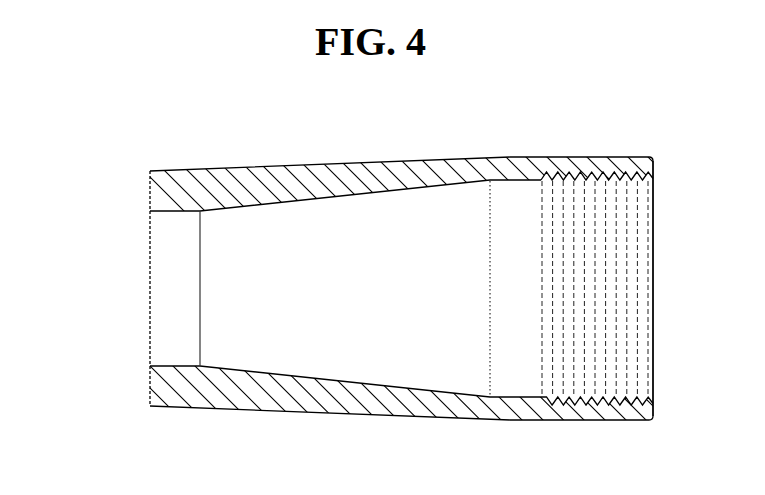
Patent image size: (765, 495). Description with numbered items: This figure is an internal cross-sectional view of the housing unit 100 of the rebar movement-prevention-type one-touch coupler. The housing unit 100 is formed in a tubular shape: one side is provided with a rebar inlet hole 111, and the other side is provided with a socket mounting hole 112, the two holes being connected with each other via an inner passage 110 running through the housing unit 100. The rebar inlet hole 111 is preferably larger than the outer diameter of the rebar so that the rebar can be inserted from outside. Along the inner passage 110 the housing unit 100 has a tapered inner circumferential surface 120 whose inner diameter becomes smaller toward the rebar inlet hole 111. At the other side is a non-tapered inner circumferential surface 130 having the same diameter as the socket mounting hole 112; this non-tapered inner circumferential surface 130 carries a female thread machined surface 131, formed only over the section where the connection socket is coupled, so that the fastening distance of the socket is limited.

The housing unit 100 is at (89, 123).
The inner passage 110 is at (418, 322).
The rebar inlet hole 111 is at (168, 292).
The socket mounting hole 112 is at (620, 290).
The tapered inner circumferential surface 120 is at (309, 383).
The non-tapered inner circumferential surface 130 is at (507, 398).
The female thread machined surface 131 is at (578, 402).